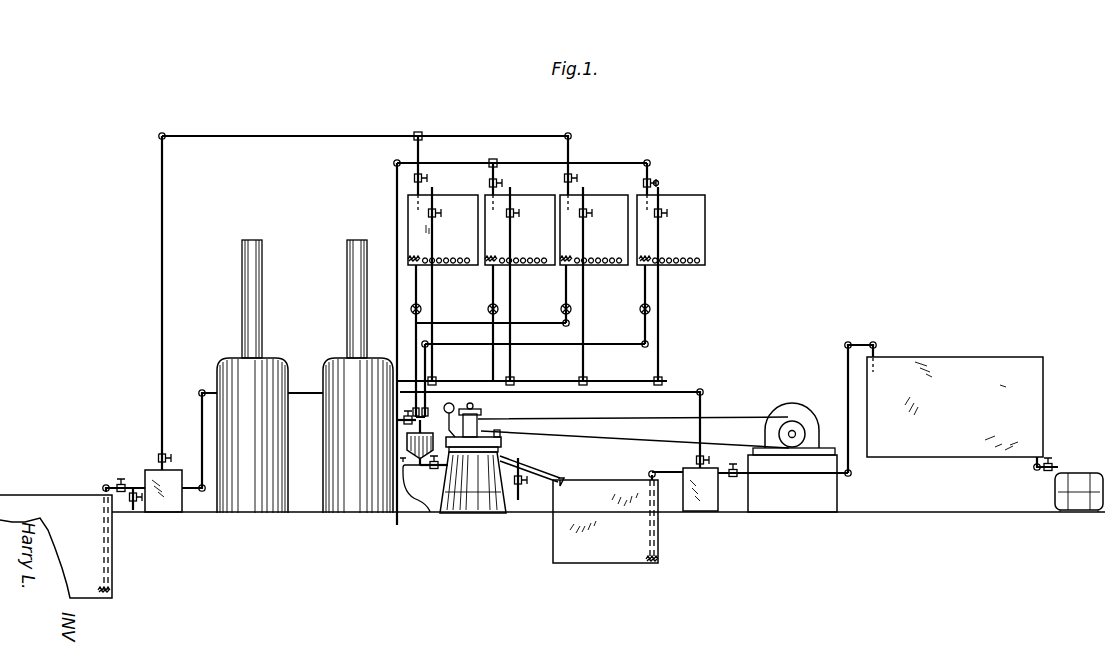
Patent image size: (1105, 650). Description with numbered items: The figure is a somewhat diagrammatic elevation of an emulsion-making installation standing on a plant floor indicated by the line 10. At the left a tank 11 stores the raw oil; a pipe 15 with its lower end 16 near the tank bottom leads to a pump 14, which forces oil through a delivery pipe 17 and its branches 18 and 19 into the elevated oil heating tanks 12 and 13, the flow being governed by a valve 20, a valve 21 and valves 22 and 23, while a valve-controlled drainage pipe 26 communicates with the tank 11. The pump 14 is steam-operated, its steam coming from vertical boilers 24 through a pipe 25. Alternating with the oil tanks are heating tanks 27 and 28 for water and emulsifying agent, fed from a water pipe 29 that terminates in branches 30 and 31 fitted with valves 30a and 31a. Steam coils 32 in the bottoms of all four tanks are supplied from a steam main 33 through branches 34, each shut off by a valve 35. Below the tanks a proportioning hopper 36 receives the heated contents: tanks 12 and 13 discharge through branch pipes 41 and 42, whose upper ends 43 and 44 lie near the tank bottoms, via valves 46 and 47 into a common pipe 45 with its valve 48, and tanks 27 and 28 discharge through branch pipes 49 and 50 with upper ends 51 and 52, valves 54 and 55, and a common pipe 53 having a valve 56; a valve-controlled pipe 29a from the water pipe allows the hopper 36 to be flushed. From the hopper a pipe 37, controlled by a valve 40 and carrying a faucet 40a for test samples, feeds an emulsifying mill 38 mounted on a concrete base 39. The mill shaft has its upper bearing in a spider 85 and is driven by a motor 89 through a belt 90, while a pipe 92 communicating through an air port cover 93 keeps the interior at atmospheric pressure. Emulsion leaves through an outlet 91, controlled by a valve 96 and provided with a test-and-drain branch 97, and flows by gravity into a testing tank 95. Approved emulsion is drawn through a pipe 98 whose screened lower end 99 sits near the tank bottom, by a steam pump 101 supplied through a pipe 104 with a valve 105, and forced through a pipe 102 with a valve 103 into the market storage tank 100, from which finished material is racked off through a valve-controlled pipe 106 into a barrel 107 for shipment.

The floor line 10 is at (300, 512).
The tank 11 is at (26, 493).
The heating tank 12 is at (446, 202).
The heating tank 13 is at (604, 203).
The pump 14 is at (150, 478).
The pipe 15 is at (100, 523).
The lower end 16 is at (102, 596).
The delivery pipe 17 is at (160, 280).
The branch 18 is at (414, 150).
The branch 19 is at (572, 142).
The valve 20 is at (105, 486).
The valve 21 is at (160, 460).
The valve 22 is at (413, 178).
The valve 23 is at (565, 172).
The vertical boilers 24 is at (333, 364).
The pipe 25 is at (200, 400).
The drainage pipe 26 is at (133, 510).
The heating tank 27 is at (525, 206).
The heating tank 28 is at (688, 202).
The water pipe 29 is at (395, 205).
The valve-controlled pipe 29a is at (403, 421).
The branch 30 is at (491, 176).
The valve 30a is at (494, 162).
The branch 31 is at (651, 176).
The valve 31a is at (659, 183).
The steam coil 32 is at (450, 254).
The steam main 33 is at (542, 380).
The branch 34 is at (427, 310).
The valve 35 is at (437, 213).
The proportioning hopper 36 is at (405, 440).
The pipe 37 is at (416, 471).
The emulsifying mill 38 is at (502, 445).
The concrete base 39 is at (479, 500).
The valve 40 is at (432, 460).
The faucet 40a is at (418, 500).
The branch pipe 41 is at (420, 279).
The branch pipe 42 is at (571, 281).
The upper end 43 is at (412, 255).
The upper end 44 is at (567, 257).
The common pipe 45 is at (414, 331).
The valve 46 is at (421, 306).
The valve 47 is at (571, 308).
The valve 48 is at (421, 410).
The branch pipe 49 is at (498, 283).
The branch pipe 50 is at (650, 283).
The upper end 51 is at (491, 255).
The upper end 52 is at (645, 256).
The common pipe 53 is at (423, 349).
The valve 54 is at (488, 313).
The valve 55 is at (650, 309).
The valve 56 is at (427, 420).
The spider 85 is at (482, 421).
The motor 89 is at (797, 408).
The belt 90 is at (620, 421).
The outlet 91 is at (522, 462).
The pipe 92 is at (456, 410).
The air port cover 93 is at (500, 437).
The tank 95 is at (616, 563).
The valve 96 is at (563, 473).
The branch 97 is at (518, 500).
The pipe 98 is at (648, 521).
The lower end 99 is at (653, 563).
The market storage tank 100 is at (955, 357).
The pump 101 is at (708, 500).
The pipe 102 is at (851, 465).
The valve 103 is at (738, 478).
The pipe 104 is at (702, 391).
The valve 105 is at (696, 460).
The valve-controlled pipe 106 is at (1050, 463).
The barrel 107 is at (1055, 488).